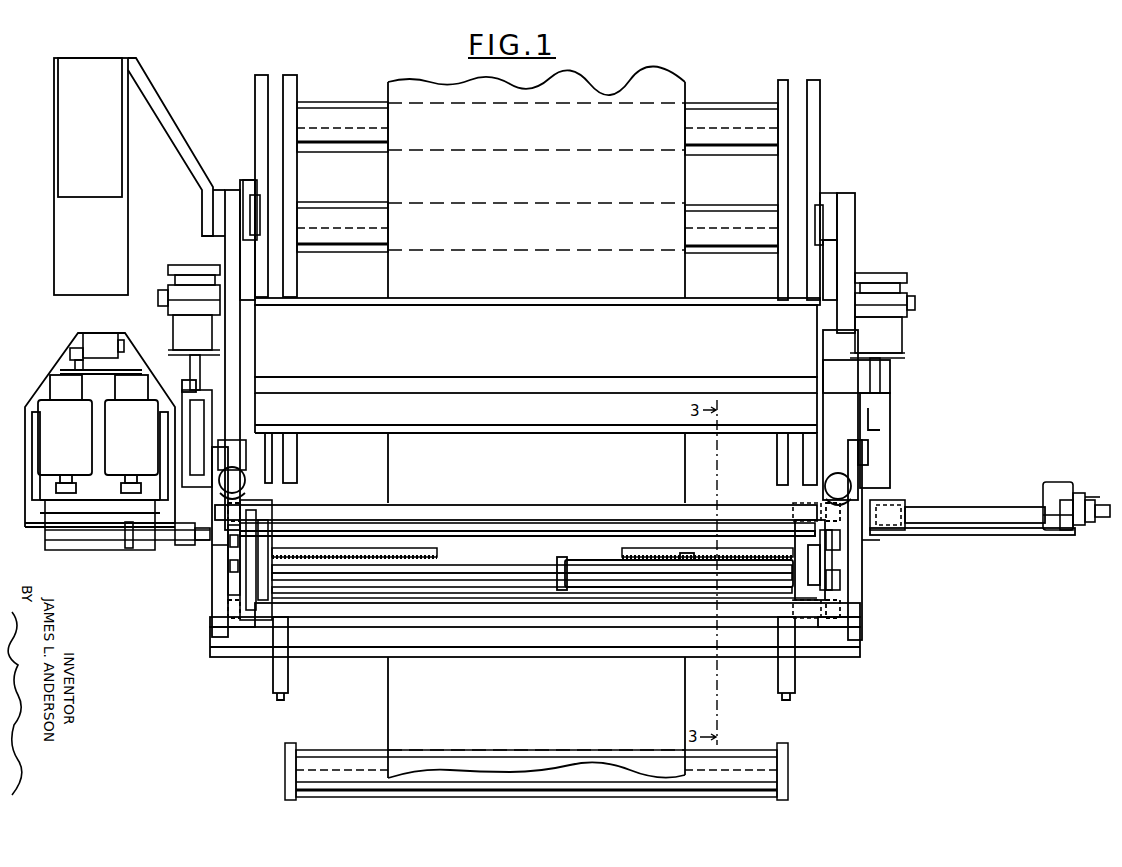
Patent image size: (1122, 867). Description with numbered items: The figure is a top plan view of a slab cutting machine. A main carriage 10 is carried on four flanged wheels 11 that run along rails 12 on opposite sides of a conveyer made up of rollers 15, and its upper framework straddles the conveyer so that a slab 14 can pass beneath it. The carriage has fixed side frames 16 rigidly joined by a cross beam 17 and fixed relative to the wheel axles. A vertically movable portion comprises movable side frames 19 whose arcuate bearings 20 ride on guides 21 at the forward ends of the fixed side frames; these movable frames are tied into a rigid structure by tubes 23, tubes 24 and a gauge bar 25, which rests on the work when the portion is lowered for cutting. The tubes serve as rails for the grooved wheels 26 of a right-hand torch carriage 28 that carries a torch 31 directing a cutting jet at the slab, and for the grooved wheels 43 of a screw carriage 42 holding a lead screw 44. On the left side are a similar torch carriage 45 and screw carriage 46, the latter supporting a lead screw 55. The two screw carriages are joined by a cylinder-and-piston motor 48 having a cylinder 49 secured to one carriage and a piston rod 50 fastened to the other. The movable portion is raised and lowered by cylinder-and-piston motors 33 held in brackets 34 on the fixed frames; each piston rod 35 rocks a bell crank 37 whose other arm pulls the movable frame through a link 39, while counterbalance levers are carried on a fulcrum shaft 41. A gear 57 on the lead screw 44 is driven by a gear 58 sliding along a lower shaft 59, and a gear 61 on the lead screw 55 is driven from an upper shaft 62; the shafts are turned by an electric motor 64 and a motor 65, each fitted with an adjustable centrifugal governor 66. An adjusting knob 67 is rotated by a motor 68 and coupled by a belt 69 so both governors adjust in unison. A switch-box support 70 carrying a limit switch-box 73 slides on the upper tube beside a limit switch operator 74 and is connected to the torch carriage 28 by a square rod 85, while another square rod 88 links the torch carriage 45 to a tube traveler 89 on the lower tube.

The main carriage 10 is at (581, 292).
The flanged wheels 11 is at (258, 192).
The rails 12 is at (268, 75).
The slab 14 is at (536, 216).
The rollers 15 is at (718, 115).
The fixed side frames 16 is at (233, 262).
The cross beam 17 is at (413, 306).
The movable side frames 19 is at (215, 592).
The arcuate bearings 20 is at (242, 482).
The guides 21 is at (236, 478).
The tubes 23 is at (462, 610).
The tubes 24 is at (480, 518).
The gauge bar 25 is at (546, 648).
The grooved wheels 26 is at (785, 515).
The torch carriage 28 is at (800, 568).
The torch 31 is at (290, 674).
The cylinder-and-piston motors 33 is at (178, 362).
The brackets 34 is at (173, 308).
The piston rod 35 is at (195, 380).
The bell crank 37 is at (188, 450).
The link 39 is at (240, 462).
The fulcrum shaft 41 is at (466, 382).
The screw carriage 42 is at (862, 612).
The grooved wheels 43 is at (215, 545).
The lead screw 44 is at (622, 552).
The torch carriage 45 is at (270, 520).
The screw carriage 46 is at (230, 560).
The cylinder-and-piston motor 48 is at (606, 566).
The cylinder 49 is at (665, 575).
The piston rod 50 is at (490, 578).
The lead screw 55 is at (440, 552).
The gear 57 is at (860, 602).
The gear 58 is at (862, 580).
The shaft 59 is at (86, 537).
The gear 61 is at (215, 525).
The shaft 62 is at (182, 540).
The electric motor 64 is at (82, 436).
The motor 65 is at (148, 436).
The adjustable centrifugal governor 66 is at (99, 387).
The adjusting knob 67 is at (62, 374).
The motor 68 is at (97, 345).
The belt 69 is at (75, 356).
The switch-box support 70 is at (1068, 528).
The limit switch-box 73 is at (1048, 492).
The limit switch operator 74 is at (1085, 493).
The square rod 85 is at (975, 532).
The square rod 88 is at (353, 528).
The tube traveler 89 is at (900, 500).